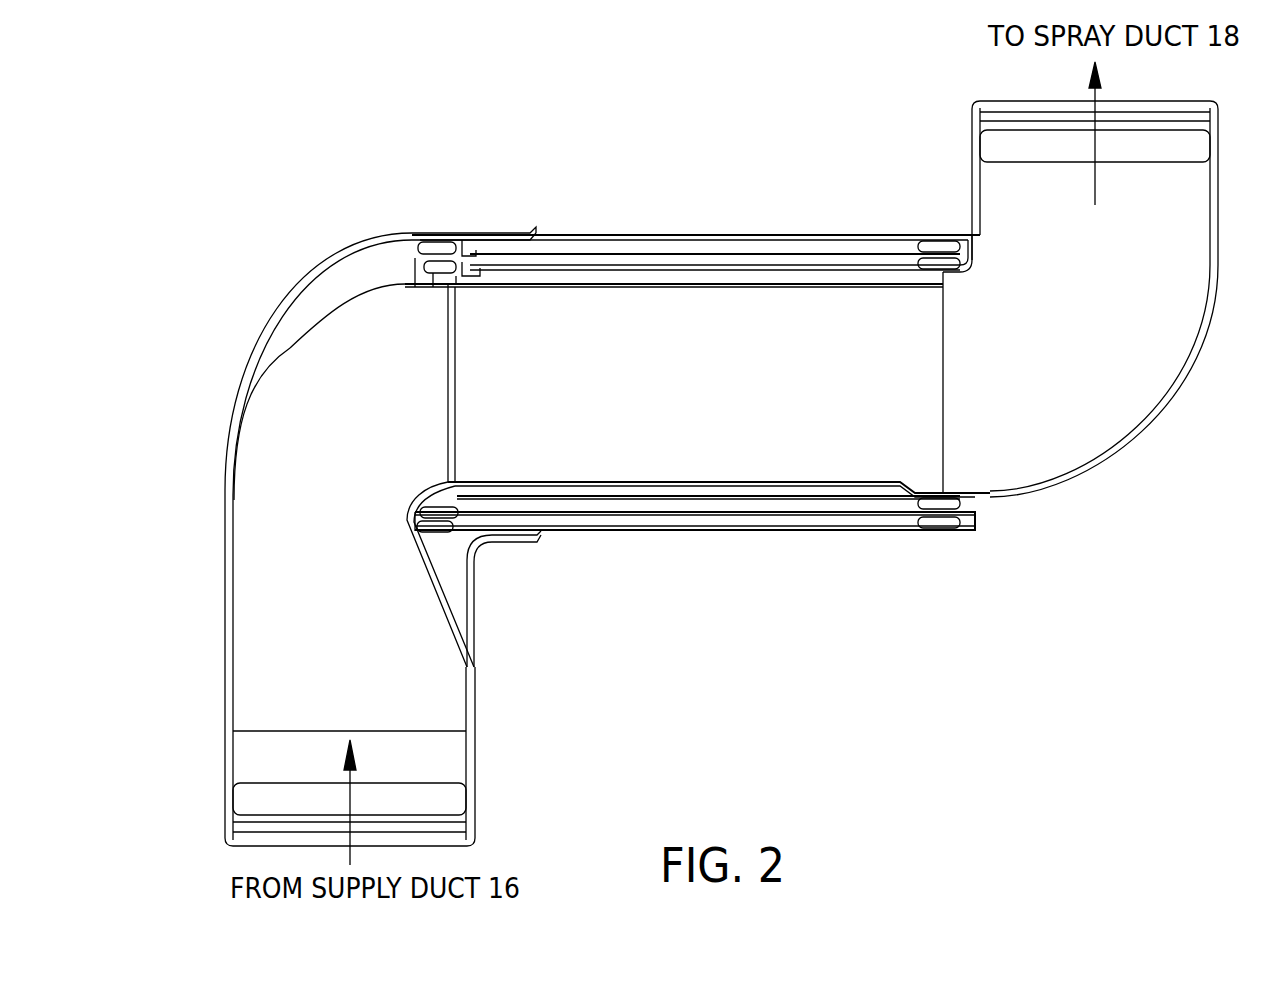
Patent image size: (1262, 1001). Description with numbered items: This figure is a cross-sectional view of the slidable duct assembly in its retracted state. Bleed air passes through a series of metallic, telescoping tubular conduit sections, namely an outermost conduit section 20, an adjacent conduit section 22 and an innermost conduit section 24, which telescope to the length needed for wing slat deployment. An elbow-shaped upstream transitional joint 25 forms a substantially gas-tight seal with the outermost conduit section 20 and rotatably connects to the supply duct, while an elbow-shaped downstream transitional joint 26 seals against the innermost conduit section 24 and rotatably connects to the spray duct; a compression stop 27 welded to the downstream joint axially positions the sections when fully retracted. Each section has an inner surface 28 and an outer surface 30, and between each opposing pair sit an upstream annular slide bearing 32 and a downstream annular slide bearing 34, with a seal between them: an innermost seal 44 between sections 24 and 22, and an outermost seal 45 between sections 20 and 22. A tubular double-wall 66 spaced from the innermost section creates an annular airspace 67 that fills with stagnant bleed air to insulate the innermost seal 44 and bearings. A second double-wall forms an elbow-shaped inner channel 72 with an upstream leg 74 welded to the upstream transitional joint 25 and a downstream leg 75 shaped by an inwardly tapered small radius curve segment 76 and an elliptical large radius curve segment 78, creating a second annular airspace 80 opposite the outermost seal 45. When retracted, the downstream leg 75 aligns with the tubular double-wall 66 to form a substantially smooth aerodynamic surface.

The outermost conduit section 20 is at (836, 238).
The conduit section 22 is at (755, 250).
The innermost conduit section 24 is at (838, 272).
The upstream transitional joint 25 is at (222, 422).
The downstream transitional joint 26 is at (1115, 432).
The compression stop 27 is at (967, 237).
The inner surface 28 is at (583, 272).
The outer surface 30 is at (592, 252).
The upstream annular slide bearing 32 is at (442, 262).
The downstream annular slide bearing 34 is at (935, 243).
The innermost seal 44 is at (457, 286).
The outermost seal 45 is at (467, 243).
The tubular double-wall 66 is at (752, 482).
The annular airspace 67 is at (655, 483).
The inner channel 72 is at (335, 302).
The upstream leg 74 is at (236, 616).
The downstream leg 75 is at (372, 307).
The small radius curve segment 76 is at (409, 506).
The large radius curve segment 78 is at (296, 356).
The second annular airspace 80 is at (462, 592).